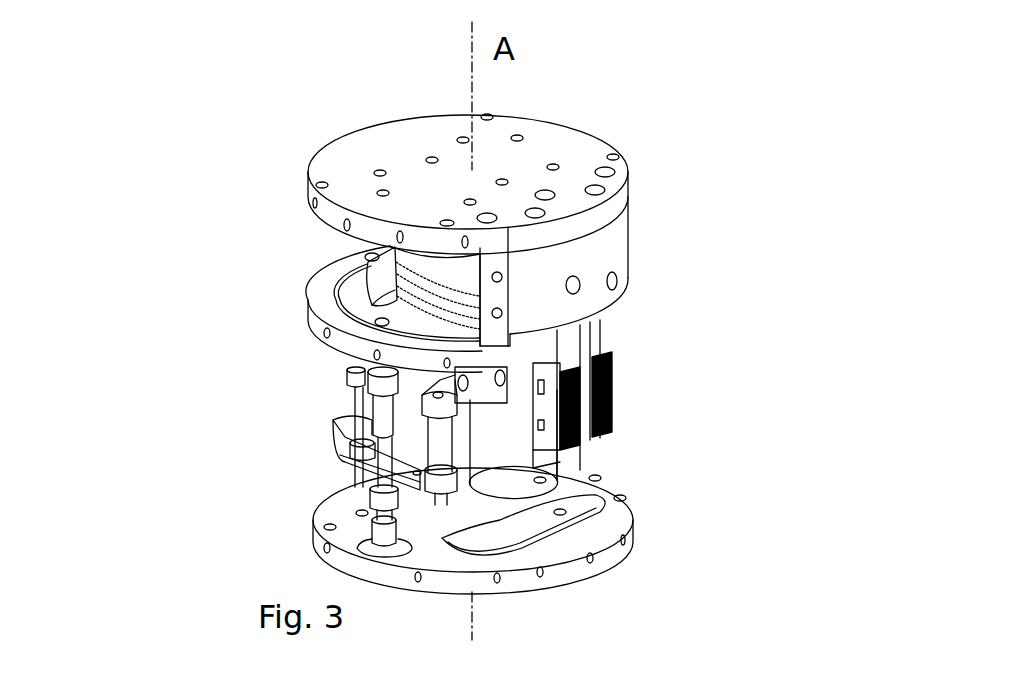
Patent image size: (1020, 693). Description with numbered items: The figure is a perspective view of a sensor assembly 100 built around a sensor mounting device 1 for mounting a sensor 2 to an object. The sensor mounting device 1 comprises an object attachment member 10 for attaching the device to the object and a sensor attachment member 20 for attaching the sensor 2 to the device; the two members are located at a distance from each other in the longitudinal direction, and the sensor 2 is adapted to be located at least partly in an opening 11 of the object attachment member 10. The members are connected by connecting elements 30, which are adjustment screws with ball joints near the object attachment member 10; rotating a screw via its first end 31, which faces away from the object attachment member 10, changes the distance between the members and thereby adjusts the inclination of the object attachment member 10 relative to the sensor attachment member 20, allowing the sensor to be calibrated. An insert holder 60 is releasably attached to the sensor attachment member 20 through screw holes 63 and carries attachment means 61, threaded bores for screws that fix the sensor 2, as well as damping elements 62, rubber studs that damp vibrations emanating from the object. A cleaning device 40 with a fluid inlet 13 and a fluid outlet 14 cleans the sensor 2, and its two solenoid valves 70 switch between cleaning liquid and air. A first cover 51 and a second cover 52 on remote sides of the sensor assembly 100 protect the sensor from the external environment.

The sensor mounting device 1 is at (467, 365).
The sensor assembly 100 is at (678, 120).
The sensor 2 is at (400, 260).
The object attachment member 10 is at (328, 293).
The opening 11 is at (383, 280).
The fluid inlet 13 is at (575, 286).
The fluid outlet 14 is at (368, 287).
The sensor attachment member 20 is at (348, 435).
The connecting elements 30 is at (377, 407).
The first end 31 is at (378, 530).
The cleaning device 40 is at (610, 284).
The first cover 51 is at (395, 152).
The second cover 52 is at (338, 557).
The insert holder 60 is at (646, 424).
The attachment means 61 is at (510, 380).
The damping elements 62 is at (442, 455).
The screw holes 63 is at (418, 478).
The valve 70 is at (614, 402).